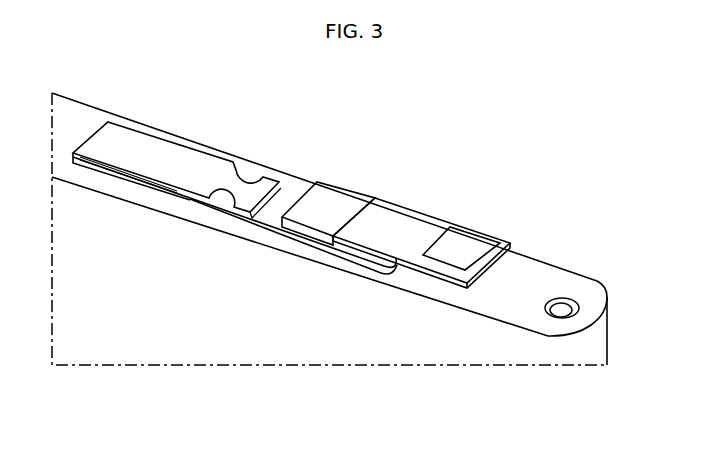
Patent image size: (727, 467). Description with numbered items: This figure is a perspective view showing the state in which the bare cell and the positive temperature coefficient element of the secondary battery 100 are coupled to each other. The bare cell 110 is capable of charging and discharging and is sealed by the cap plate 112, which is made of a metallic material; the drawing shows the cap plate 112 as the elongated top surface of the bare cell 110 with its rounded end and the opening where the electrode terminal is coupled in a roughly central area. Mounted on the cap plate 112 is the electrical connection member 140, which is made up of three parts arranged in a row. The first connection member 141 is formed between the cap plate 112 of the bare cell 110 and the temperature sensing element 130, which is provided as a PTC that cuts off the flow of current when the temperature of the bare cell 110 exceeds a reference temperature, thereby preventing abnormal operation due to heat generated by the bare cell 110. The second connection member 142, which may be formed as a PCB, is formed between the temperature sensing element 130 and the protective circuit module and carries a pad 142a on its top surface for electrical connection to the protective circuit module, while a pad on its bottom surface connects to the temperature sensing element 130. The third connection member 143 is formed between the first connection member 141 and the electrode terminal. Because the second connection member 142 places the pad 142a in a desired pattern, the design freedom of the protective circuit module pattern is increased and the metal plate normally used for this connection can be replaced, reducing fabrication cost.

The secondary battery 100 is at (571, 138).
The bare cell 110 is at (356, 229).
The cap plate 112 is at (523, 273).
The temperature sensing element 130 is at (315, 221).
The electrical connection member 140 is at (294, 177).
The first connection member 141 is at (288, 192).
The second connection member 142 is at (423, 196).
The pad 142a is at (465, 243).
The third connection member 143 is at (208, 165).